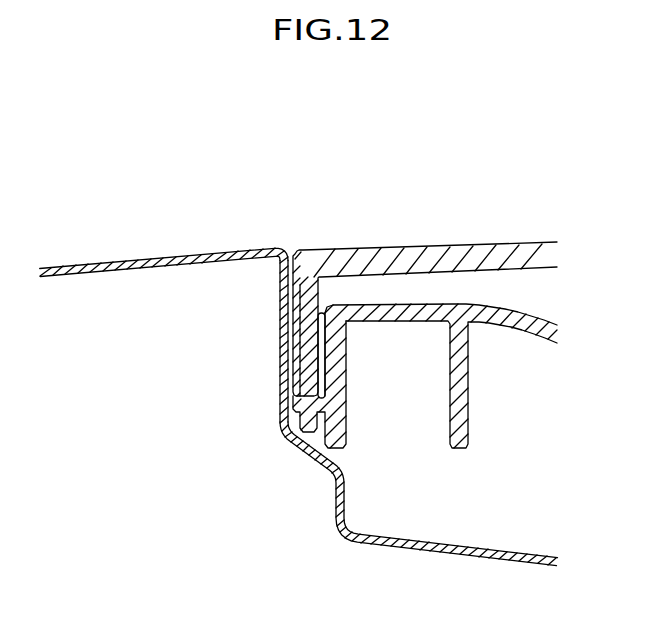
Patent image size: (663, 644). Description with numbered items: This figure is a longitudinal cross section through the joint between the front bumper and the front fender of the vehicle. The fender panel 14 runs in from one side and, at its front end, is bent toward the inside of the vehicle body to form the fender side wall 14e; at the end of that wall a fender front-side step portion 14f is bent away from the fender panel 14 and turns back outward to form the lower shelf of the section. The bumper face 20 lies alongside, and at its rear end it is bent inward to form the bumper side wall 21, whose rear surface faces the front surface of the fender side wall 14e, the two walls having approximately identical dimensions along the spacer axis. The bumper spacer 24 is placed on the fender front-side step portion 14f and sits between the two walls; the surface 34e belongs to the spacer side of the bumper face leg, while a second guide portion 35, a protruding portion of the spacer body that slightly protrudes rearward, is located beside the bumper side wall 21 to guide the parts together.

The fender panel 14 is at (136, 256).
The fender side wall 14e is at (280, 308).
The fender front-side step portion 14f is at (453, 548).
The bumper face 20 is at (448, 243).
The leg surface 34e is at (293, 338).
The bumper side wall 21 is at (298, 396).
The bumper spacer 24 is at (531, 318).
The second guide portion 35 is at (323, 362).